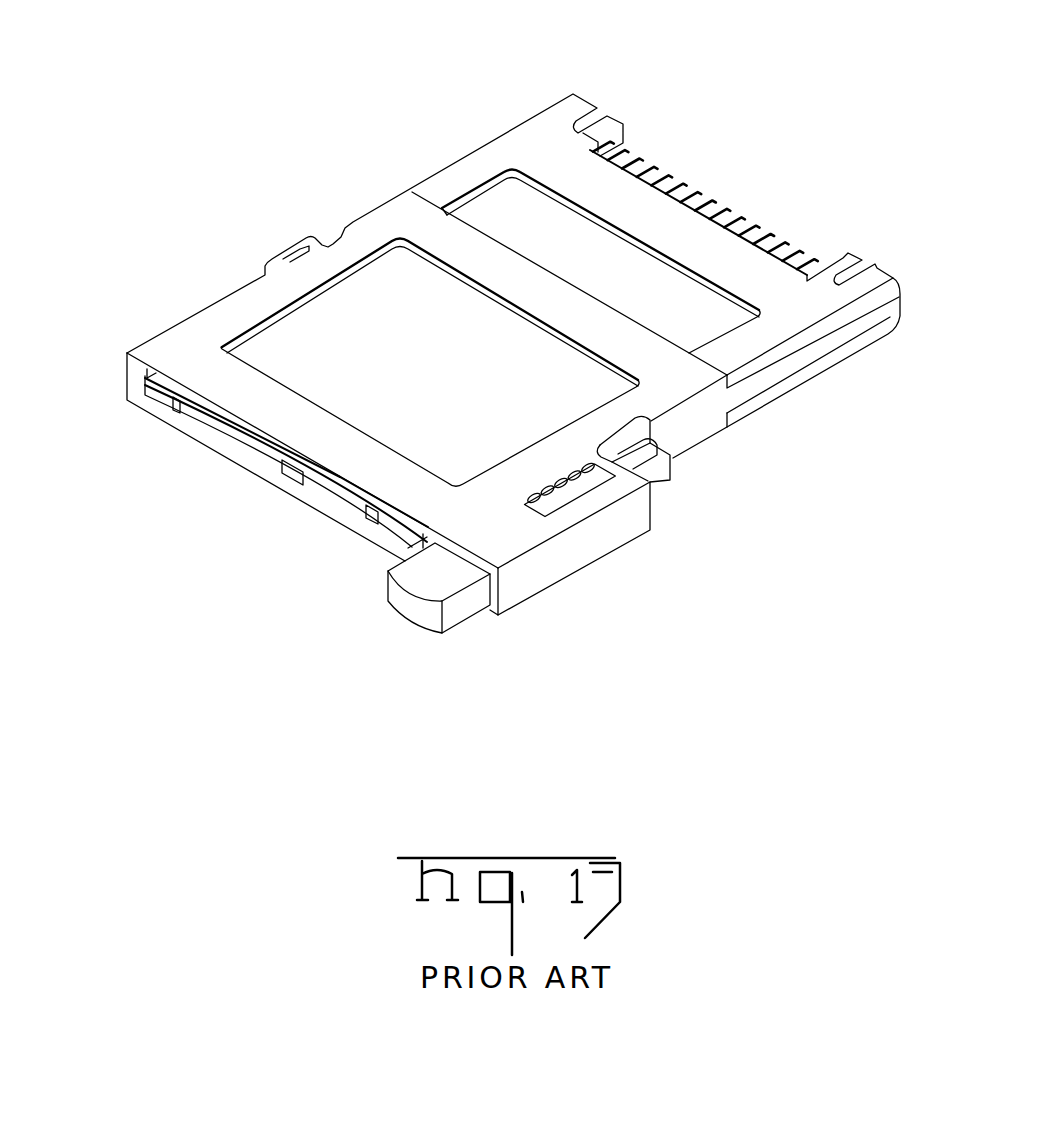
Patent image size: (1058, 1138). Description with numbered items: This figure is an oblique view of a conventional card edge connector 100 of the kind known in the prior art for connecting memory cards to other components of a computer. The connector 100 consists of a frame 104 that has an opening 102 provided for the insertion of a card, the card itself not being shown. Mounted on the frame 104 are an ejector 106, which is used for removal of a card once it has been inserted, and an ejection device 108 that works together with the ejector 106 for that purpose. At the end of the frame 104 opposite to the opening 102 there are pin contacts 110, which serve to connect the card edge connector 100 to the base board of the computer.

The card edge connector 100 is at (287, 61).
The opening 102 is at (247, 440).
The frame 104 is at (607, 533).
The ejector 106 is at (460, 608).
The ejection device 108 is at (407, 482).
The pin contacts 110 is at (733, 210).